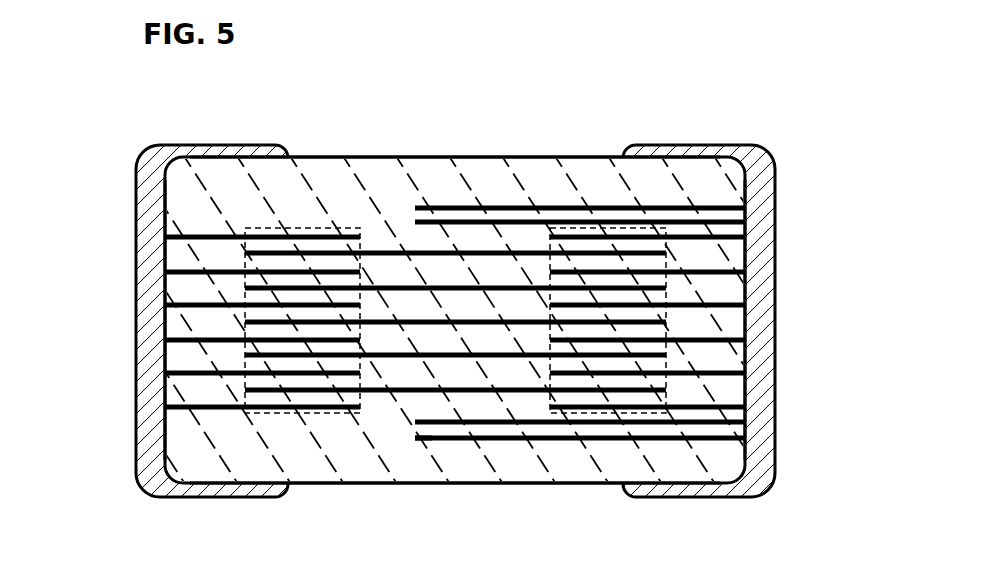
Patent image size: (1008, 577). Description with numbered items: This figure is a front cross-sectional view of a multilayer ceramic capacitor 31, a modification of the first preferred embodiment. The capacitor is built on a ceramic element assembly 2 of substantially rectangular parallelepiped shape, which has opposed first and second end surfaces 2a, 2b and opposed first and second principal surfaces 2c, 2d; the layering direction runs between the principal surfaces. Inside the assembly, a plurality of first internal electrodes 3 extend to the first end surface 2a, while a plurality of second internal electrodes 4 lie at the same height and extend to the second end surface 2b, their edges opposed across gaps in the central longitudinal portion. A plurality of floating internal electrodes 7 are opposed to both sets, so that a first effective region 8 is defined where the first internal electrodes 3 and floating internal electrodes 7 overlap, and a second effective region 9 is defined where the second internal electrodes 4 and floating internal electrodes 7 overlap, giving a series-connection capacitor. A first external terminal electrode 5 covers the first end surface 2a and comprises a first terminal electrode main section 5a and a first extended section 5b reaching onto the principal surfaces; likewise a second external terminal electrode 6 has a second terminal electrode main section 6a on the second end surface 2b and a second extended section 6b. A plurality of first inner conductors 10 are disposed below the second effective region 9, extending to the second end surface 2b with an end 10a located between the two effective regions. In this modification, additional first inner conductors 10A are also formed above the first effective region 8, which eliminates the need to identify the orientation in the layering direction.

The multilayer ceramic capacitor 31 is at (126, 96).
The ceramic element assembly 2 is at (371, 146).
The first end surface 2a is at (748, 202).
The second end surface 2b is at (170, 198).
The first principal surface 2c is at (522, 156).
The second principal surface 2d is at (322, 484).
The first internal electrodes 3 is at (745, 262).
The second internal electrodes 4 is at (200, 368).
The first external terminal electrode 5 is at (636, 297).
The first terminal electrode main section 5a is at (778, 172).
The first extended section 5b is at (720, 143).
The second external terminal electrode 6 is at (340, 330).
The second terminal electrode main section 6a is at (137, 466).
The second extended section 6b is at (185, 498).
The floating internal electrodes 7 is at (413, 252).
The first effective region 8 is at (597, 217).
The second effective region 9 is at (309, 216).
The first inner conductors 10 is at (718, 415).
The first inner conductors 10A is at (455, 207).
The end of the first inner conductor 10a is at (420, 440).